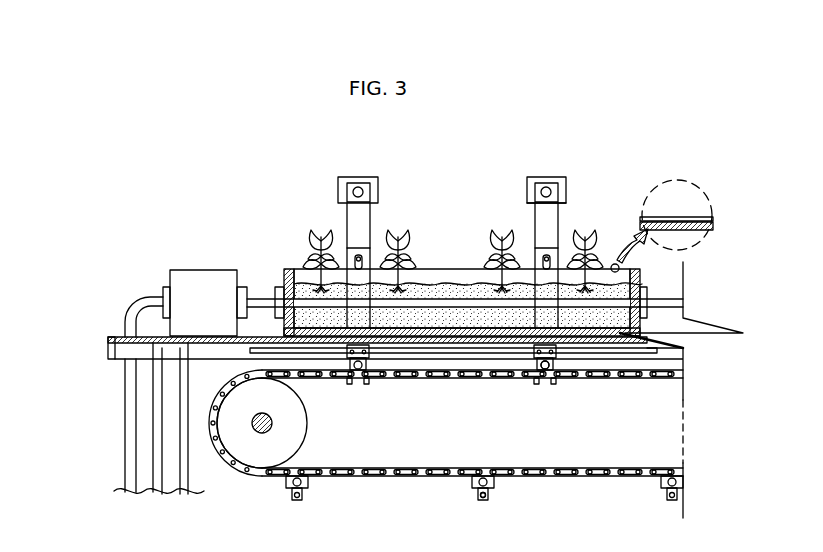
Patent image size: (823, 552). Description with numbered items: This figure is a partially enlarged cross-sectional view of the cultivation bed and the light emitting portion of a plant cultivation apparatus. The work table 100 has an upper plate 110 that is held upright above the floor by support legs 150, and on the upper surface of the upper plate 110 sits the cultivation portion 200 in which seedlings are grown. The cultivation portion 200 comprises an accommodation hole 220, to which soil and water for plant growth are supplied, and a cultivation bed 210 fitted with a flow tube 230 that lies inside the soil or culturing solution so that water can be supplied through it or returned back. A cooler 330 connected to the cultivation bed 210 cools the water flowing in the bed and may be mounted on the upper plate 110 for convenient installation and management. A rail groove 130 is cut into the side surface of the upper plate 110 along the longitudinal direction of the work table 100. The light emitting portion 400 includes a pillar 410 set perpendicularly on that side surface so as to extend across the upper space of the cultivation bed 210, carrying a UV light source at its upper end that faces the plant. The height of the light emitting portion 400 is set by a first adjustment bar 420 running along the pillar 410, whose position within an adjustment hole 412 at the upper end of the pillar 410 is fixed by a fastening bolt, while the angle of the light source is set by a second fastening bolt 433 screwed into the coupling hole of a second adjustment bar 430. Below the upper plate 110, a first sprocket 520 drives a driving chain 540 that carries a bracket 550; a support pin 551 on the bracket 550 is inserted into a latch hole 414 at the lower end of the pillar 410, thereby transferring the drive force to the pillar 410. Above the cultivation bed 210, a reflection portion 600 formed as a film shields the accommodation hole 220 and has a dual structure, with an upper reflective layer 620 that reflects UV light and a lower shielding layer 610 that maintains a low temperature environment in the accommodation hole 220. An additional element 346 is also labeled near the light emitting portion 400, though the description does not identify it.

The work table 100 is at (104, 353).
The upper plate 110 is at (123, 340).
The rail groove 130 is at (656, 352).
The support legs 150 is at (165, 422).
The cultivation portion 200 is at (419, 268).
The cultivation bed 210 is at (288, 282).
The accommodation hole 220 is at (432, 327).
The flow tube 230 is at (137, 313).
The cooler 330 is at (178, 278).
The coupling part 346 is at (530, 203).
The light emitting portion 400 is at (452, 217).
The pillar 410 is at (366, 216).
The adjustment hole 412 is at (356, 258).
The latch hole 414 is at (543, 385).
The first adjustment bar 420 is at (380, 203).
The second adjustment bar 430 is at (352, 186).
The second fastening bolt 433 is at (362, 189).
The first sprocket 520 is at (275, 447).
The driving chain 540 is at (413, 373).
The bracket 550 is at (473, 487).
The support pin 551 is at (550, 367).
The reflection portion 600 is at (678, 209).
The shielding layer 610 is at (683, 230).
The reflective layer 620 is at (668, 217).